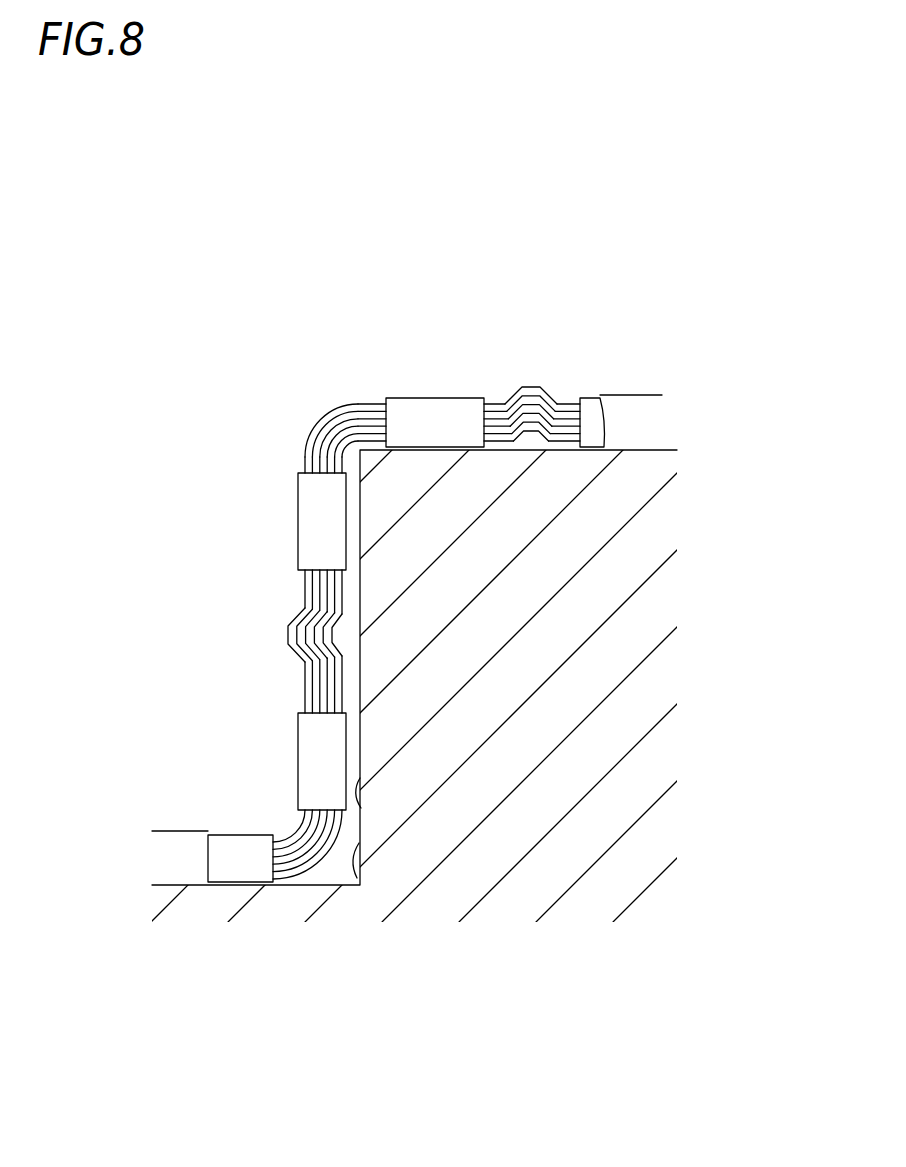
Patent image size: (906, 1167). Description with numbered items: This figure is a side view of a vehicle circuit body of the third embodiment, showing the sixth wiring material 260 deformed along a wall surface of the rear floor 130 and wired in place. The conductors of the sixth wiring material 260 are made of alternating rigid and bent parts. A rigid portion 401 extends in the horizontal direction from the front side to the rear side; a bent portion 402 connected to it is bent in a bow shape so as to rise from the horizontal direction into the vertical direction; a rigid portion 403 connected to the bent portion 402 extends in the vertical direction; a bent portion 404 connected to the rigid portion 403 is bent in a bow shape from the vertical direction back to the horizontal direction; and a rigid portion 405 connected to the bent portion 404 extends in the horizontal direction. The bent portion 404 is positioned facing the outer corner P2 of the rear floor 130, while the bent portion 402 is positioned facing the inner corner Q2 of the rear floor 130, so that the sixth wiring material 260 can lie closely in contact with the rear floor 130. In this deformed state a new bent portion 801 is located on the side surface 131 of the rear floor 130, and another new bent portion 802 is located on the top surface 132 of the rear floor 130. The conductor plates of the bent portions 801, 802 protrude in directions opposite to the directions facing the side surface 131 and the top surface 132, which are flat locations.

The rear floor 130 is at (583, 695).
The side surface 131 is at (362, 809).
The top surface 132 is at (606, 447).
The sixth wiring material 260 is at (329, 305).
The rigid portion 401 is at (235, 872).
The bent portion 402 is at (322, 868).
The rigid portion 403 is at (305, 520).
The bent portion 404 is at (330, 418).
The rigid portion 405 is at (428, 408).
The new bent portion 801 is at (287, 634).
The new bent portion 802 is at (535, 393).
The outer corner P2 is at (352, 412).
The inner corner Q2 is at (360, 842).